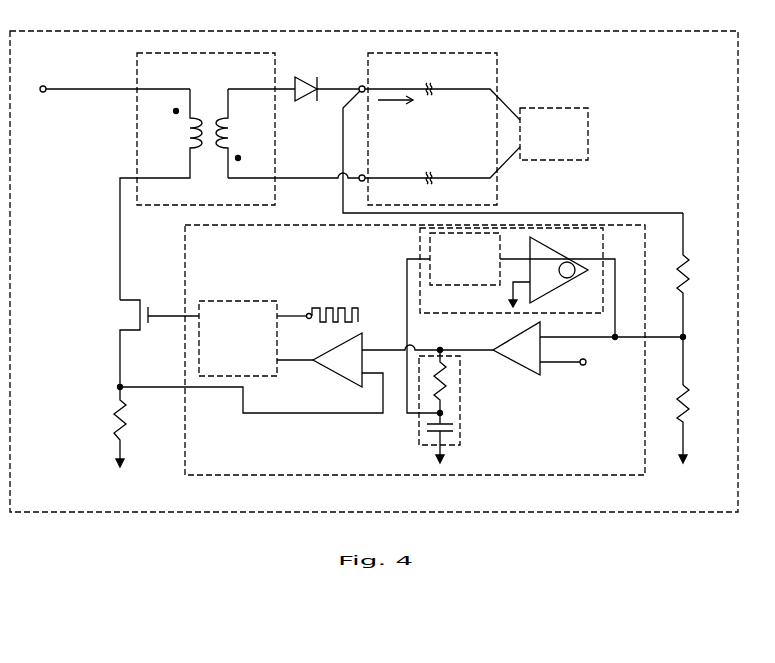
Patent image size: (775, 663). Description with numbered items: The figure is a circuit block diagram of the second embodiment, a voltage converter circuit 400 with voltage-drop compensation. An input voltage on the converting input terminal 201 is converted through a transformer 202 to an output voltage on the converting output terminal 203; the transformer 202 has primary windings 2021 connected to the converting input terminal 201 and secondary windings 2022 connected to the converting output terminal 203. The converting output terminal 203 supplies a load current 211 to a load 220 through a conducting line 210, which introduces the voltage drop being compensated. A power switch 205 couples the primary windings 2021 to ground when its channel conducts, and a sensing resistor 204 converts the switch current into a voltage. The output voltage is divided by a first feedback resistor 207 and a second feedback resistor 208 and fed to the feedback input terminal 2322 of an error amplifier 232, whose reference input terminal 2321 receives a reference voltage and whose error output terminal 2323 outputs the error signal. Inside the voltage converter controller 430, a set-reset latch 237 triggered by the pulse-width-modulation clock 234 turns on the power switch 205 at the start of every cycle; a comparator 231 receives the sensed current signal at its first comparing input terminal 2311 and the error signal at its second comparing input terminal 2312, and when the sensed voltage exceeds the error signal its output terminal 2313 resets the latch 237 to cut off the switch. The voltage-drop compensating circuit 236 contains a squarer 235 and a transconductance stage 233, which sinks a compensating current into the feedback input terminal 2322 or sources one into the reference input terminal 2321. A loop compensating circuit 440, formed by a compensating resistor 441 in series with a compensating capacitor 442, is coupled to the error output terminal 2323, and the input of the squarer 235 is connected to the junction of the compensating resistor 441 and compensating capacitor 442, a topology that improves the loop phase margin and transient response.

The converting input terminal 201 is at (43, 86).
The transformer 202 is at (224, 78).
The primary windings 2021 is at (183, 143).
The secondary windings 2022 is at (230, 135).
The converting output terminal 203 is at (360, 86).
The sensing resistor 204 is at (114, 425).
The power switch 205 is at (118, 303).
The first feedback resistor 207 is at (689, 272).
The second feedback resistor 208 is at (689, 396).
The conducting line 210 is at (450, 140).
The load current 211 is at (395, 104).
The load 220 is at (542, 153).
The comparator 231 is at (330, 372).
The first comparing input terminal 2311 is at (363, 376).
The second comparing input terminal 2312 is at (366, 345).
The output terminal 2313 is at (312, 359).
The error amplifier 232 is at (561, 362).
The reference input terminal 2321 is at (539, 364).
The feedback input terminal 2322 is at (545, 337).
The error output terminal 2323 is at (492, 346).
The transconductance stage 233 is at (548, 272).
The pulse-width-modulation clock 234 is at (309, 312).
The squarer 235 is at (453, 280).
The voltage-drop compensating circuit 236 is at (476, 309).
The set-reset latch 237 is at (250, 347).
The voltage converter circuit 400 is at (45, 239).
The voltage converter controller 430 is at (227, 461).
The loop compensating circuit 440 is at (461, 405).
The compensating resistor 441 is at (449, 380).
The compensating capacitor 442 is at (454, 428).